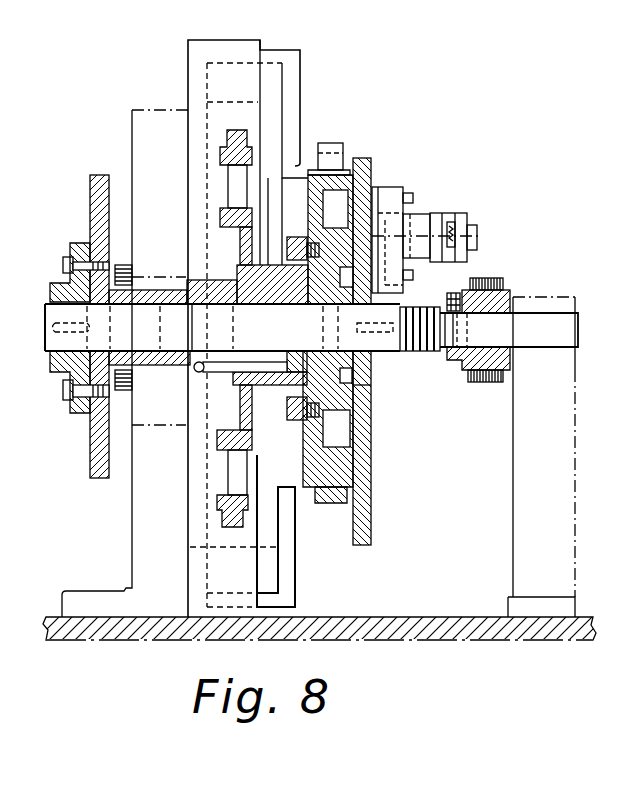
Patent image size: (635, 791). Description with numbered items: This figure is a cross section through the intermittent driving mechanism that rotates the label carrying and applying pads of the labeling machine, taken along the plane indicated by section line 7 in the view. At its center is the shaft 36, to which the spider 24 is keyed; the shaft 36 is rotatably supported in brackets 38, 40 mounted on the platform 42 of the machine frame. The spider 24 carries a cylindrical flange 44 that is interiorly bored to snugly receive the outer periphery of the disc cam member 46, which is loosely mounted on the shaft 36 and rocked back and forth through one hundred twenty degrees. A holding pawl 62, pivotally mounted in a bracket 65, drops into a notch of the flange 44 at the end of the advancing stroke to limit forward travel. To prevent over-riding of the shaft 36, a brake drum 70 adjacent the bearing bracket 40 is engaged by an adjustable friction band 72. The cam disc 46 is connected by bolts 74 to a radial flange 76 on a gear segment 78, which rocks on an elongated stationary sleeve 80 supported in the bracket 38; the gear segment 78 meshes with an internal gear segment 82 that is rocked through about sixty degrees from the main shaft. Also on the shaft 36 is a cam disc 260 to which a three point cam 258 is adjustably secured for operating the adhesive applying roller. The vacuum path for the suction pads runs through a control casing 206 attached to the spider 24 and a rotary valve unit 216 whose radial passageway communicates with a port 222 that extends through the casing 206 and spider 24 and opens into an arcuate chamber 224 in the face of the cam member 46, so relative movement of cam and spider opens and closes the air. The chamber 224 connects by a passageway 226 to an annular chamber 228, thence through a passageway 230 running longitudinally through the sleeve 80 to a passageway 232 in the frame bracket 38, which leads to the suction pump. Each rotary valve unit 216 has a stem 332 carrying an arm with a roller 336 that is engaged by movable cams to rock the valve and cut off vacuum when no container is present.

The section line 7— 7 is at (222, 118).
The spider 24 is at (373, 167).
The shaft 36 is at (578, 322).
The bracket 38 is at (132, 565).
The bracket 40 is at (565, 558).
The platform 42 is at (433, 617).
The cylindrical flange 44 is at (333, 504).
The disc cam member 46 is at (308, 200).
The holding pawl 62 is at (350, 116).
The bracket 65 is at (298, 83).
The brake drum 70 is at (510, 292).
The friction band 72 is at (490, 278).
The bolts 74 is at (279, 248).
The radial flange 76 is at (300, 425).
The gear segment 78 is at (222, 213).
The stationary sleeve 80 is at (205, 288).
The internal gear segment 82 is at (225, 176).
The control casing 206 is at (390, 190).
The rotary valve unit 216 is at (480, 221).
The port 222 is at (403, 281).
The arcuate chamber 224 is at (350, 380).
The passageway 226 is at (362, 400).
The annular chamber 228 is at (275, 398).
The passageway 230 is at (253, 351).
The passageway 232 is at (190, 374).
The three point cam 258 is at (100, 176).
The cam disc 260 is at (80, 242).
The stem 332 is at (418, 227).
The roller 336 is at (478, 231).